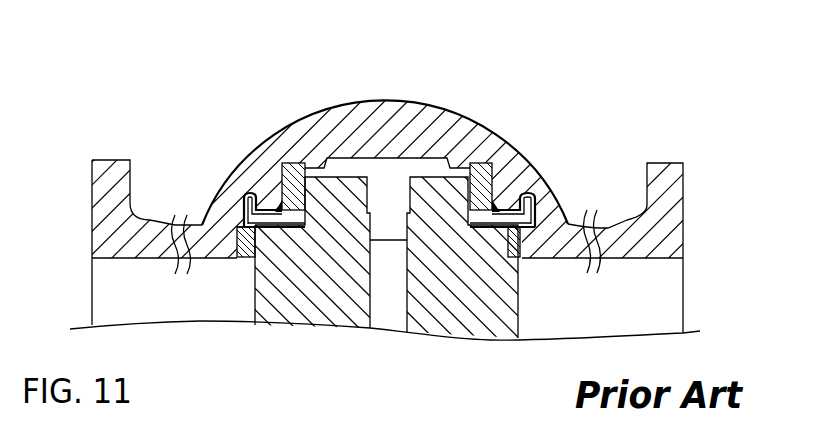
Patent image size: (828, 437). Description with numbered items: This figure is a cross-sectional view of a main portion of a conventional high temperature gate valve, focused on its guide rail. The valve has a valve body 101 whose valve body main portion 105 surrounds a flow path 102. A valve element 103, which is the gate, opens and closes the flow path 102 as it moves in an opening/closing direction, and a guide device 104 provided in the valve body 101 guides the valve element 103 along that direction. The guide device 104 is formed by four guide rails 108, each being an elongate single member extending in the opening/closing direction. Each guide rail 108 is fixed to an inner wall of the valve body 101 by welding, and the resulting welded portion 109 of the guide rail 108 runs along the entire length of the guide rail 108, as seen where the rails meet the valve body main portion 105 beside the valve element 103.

The valve body 101 is at (238, 170).
The flow path 102 is at (560, 307).
The valve element 103 is at (256, 308).
The guide device 104 is at (517, 57).
The valve body main portion 105 is at (545, 186).
The guide rail 108 is at (290, 162).
The welded portion 109 is at (276, 207).